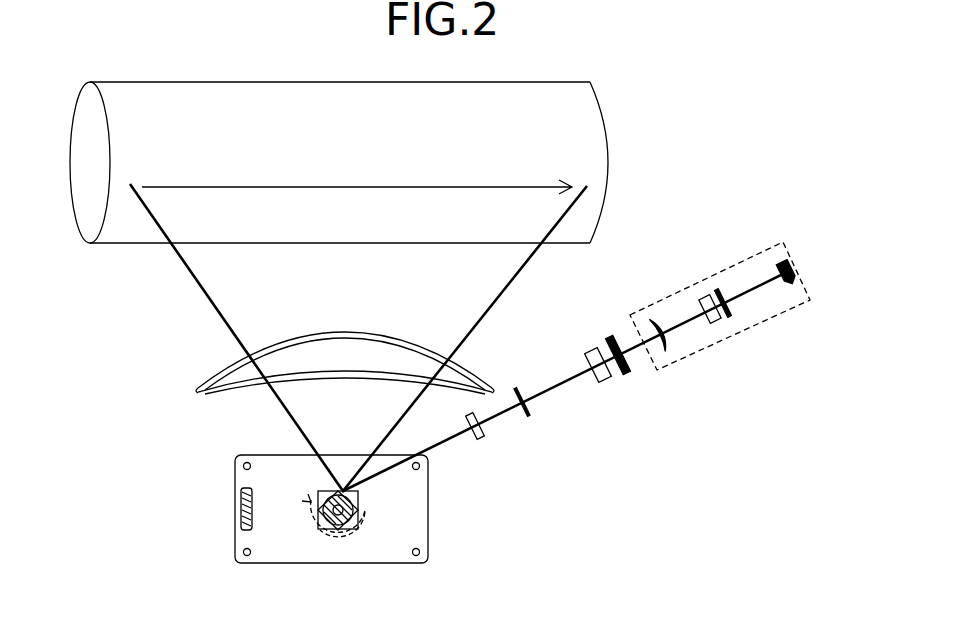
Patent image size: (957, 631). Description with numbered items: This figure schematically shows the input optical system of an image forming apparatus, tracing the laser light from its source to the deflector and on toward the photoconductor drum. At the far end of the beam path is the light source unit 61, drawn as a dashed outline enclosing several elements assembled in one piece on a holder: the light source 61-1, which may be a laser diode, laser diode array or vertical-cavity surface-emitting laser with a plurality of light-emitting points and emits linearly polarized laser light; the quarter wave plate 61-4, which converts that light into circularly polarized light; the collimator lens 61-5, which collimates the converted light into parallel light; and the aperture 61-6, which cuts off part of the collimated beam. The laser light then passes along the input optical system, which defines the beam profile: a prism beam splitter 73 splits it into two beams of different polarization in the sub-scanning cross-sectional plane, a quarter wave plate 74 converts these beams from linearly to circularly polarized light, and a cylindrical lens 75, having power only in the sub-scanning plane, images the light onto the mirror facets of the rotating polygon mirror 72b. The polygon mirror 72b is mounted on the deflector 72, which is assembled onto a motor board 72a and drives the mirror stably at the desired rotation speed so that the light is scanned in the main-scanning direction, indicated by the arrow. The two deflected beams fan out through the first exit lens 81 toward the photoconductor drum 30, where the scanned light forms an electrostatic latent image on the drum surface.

The photoconductor drum 30 is at (607, 183).
The first exit lens 81 is at (198, 388).
The deflector 72 is at (400, 516).
The motor board 72a is at (428, 556).
The rotating polygon mirror 72b is at (358, 510).
The prism beam splitter 73 is at (590, 355).
The quarter wave plate 74 is at (530, 414).
The cylindrical lens 75 is at (478, 440).
The light source unit 61 is at (737, 290).
The light source 61-1 is at (792, 290).
The quarter wave plate 61-4 is at (726, 318).
The collimator lens 61-5 is at (702, 298).
The aperture 61-6 is at (656, 315).